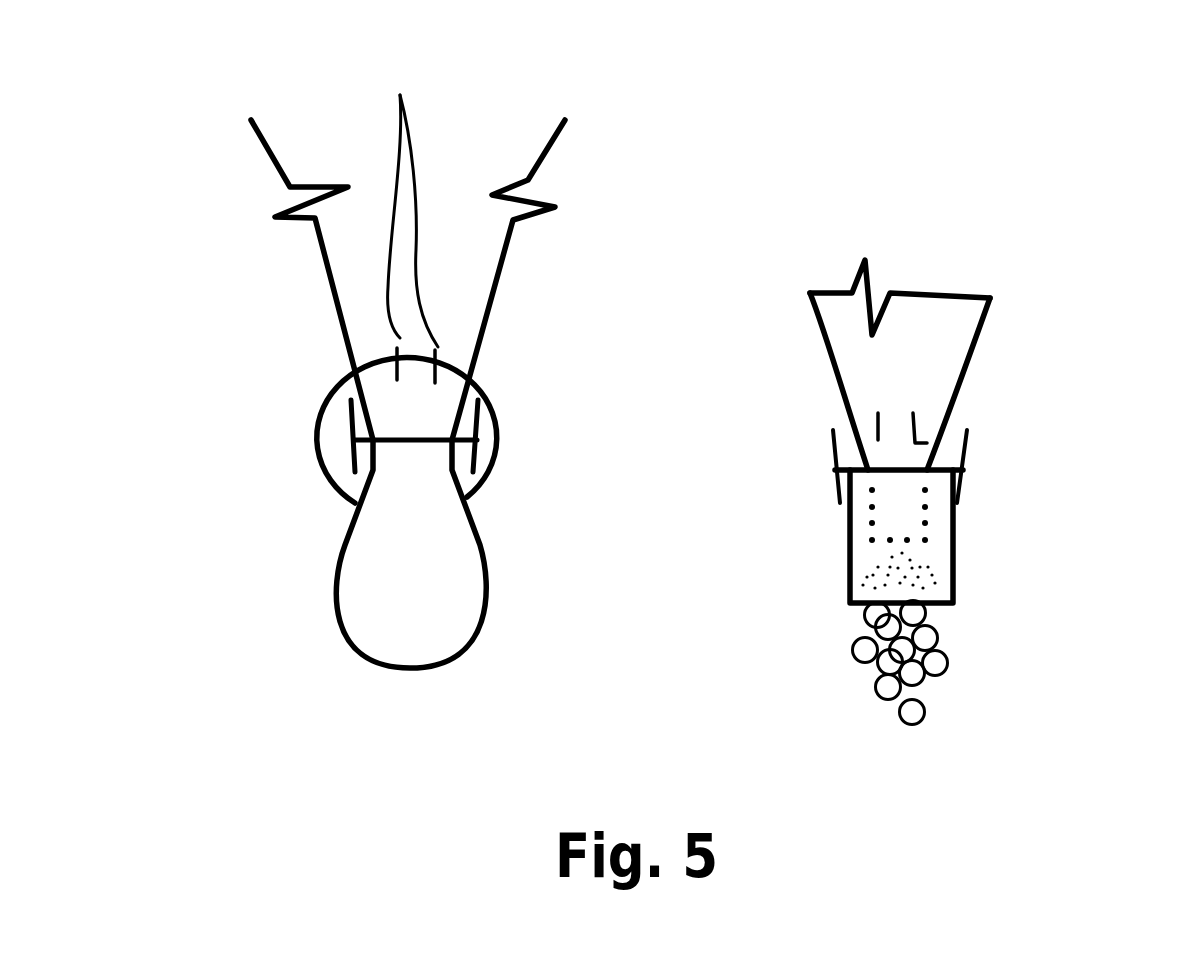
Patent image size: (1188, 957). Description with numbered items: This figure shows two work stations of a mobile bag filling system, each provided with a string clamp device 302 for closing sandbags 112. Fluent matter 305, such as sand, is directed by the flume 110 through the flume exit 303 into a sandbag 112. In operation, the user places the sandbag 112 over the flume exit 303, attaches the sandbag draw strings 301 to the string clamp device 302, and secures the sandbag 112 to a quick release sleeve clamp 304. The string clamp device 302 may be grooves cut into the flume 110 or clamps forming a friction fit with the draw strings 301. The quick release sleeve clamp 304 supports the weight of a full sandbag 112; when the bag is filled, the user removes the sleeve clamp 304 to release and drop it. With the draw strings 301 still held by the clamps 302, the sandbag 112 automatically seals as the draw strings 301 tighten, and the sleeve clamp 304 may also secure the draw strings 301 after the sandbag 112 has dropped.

The flume 110 is at (835, 357).
The sandbag 112 is at (487, 590).
The draw strings 301 is at (325, 407).
The string clamp device 302 is at (1083, 320).
The flume exit 303 is at (953, 583).
The quick release sleeve clamp 304 is at (957, 512).
The fluent matter 305 is at (955, 667).